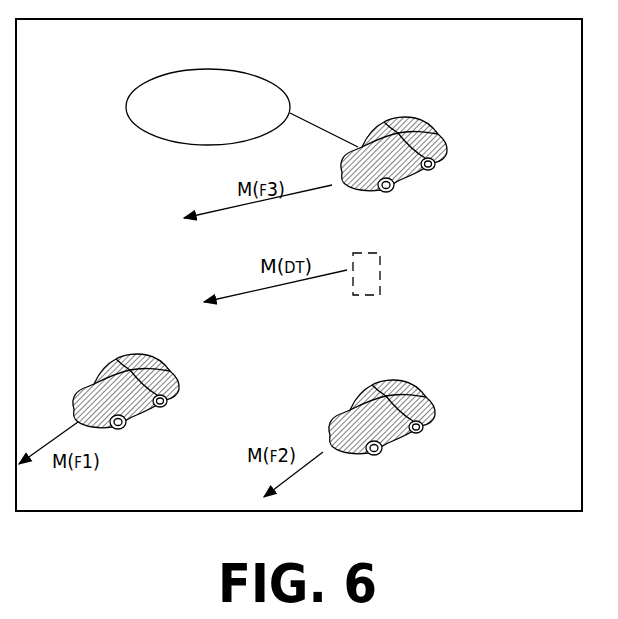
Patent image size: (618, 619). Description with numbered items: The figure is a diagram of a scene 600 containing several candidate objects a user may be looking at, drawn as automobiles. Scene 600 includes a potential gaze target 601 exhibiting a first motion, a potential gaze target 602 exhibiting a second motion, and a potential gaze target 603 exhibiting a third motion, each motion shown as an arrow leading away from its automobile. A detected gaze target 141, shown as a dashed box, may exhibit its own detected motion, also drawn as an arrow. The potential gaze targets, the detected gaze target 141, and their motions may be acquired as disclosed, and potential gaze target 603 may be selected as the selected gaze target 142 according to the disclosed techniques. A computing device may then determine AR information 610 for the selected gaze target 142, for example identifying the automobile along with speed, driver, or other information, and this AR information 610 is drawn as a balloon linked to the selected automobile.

The scene 600 is at (299, 265).
The AR information 610 is at (242, 108).
The potential gaze target 603 is at (454, 148).
The selected gaze target 142 is at (413, 167).
The detected gaze target 141 is at (380, 267).
The potential gaze target 601 is at (111, 368).
The potential gaze target 602 is at (376, 394).